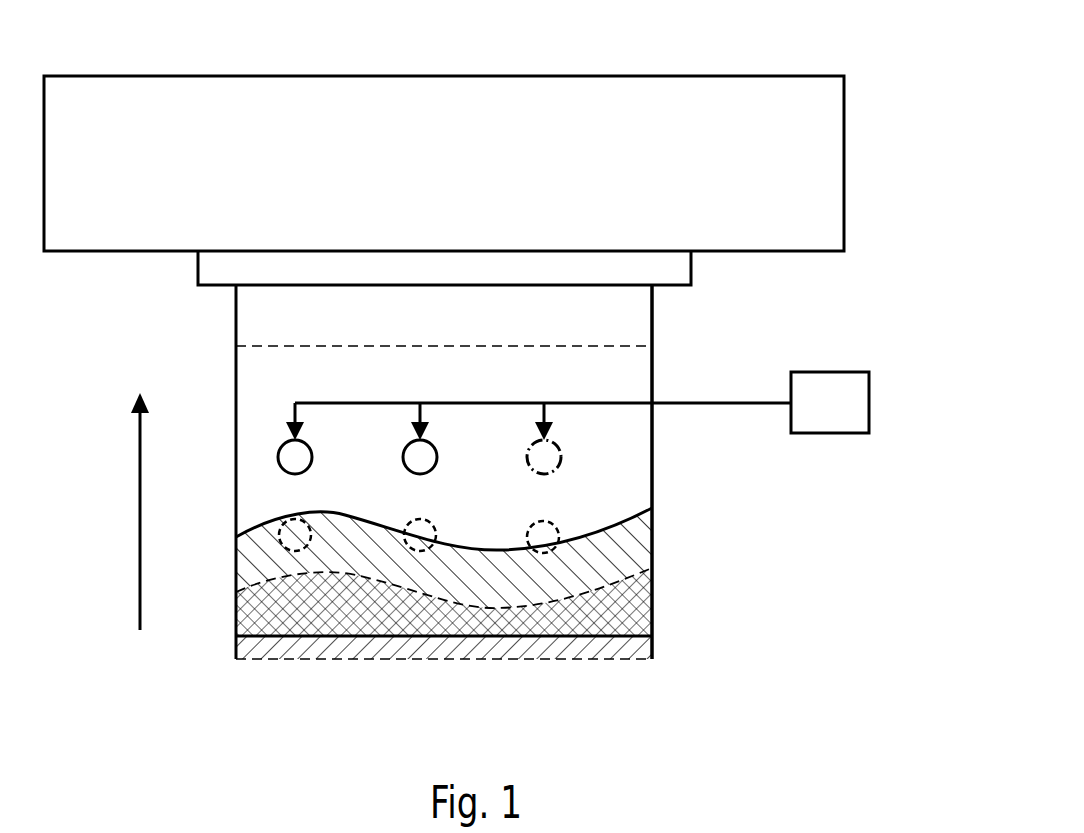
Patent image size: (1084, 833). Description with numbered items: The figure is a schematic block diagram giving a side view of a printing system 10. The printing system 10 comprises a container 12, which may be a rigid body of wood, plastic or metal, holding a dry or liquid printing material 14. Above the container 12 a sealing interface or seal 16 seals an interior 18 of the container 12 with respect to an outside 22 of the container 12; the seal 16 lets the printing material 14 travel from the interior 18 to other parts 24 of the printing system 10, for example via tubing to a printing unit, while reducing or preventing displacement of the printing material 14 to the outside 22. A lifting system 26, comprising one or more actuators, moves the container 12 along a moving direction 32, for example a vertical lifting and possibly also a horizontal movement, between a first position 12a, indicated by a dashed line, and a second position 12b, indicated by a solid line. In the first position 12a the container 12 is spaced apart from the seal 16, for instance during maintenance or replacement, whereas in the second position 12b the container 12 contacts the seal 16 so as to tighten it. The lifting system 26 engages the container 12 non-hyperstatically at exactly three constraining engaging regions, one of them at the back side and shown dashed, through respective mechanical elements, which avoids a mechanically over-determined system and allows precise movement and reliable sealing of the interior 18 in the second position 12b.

The printing system 10 is at (935, 31).
The container 12 is at (653, 317).
The first position 12a is at (424, 668).
The second position 12b is at (662, 458).
The printing material 14 is at (637, 543).
The seal 16 is at (692, 268).
The interior 18 is at (295, 322).
The outside 22 is at (870, 521).
The other parts 24 is at (845, 161).
The lifting system 26 is at (831, 434).
The moving direction 32 is at (140, 531).